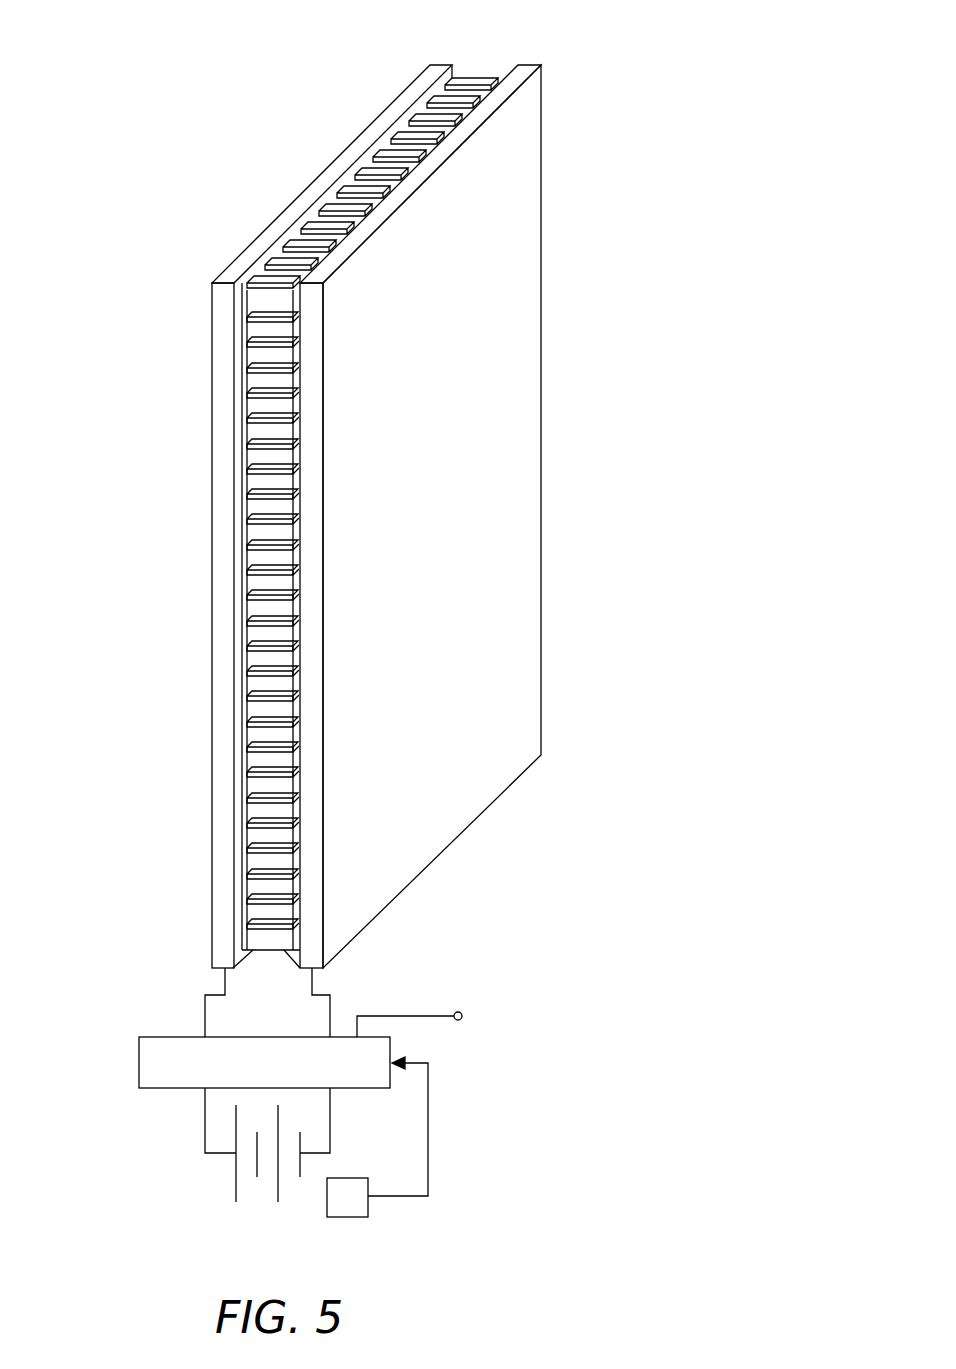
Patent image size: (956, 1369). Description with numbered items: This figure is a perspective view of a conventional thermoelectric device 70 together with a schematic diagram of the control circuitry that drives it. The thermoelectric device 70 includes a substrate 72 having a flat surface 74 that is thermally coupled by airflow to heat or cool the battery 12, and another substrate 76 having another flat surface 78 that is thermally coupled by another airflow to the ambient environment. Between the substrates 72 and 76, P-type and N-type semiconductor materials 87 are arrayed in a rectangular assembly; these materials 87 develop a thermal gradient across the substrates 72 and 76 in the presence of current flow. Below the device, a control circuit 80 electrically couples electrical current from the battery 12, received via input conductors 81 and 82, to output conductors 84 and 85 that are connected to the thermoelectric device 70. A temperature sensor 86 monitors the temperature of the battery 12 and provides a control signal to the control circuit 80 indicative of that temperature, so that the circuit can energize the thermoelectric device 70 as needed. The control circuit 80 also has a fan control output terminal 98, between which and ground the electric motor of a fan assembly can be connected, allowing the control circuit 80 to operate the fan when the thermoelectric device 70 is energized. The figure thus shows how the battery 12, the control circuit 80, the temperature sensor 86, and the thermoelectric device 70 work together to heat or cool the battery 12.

The thermoelectric device 70 is at (383, 488).
The substrate 72 is at (466, 516).
The flat surface 74 is at (400, 400).
The substrate 76 is at (267, 240).
The flat surface 78 is at (331, 488).
The control circuit 80 is at (302, 1104).
The input conductor 81 is at (205, 1132).
The input conductor 82 is at (330, 1115).
The output conductor 84 is at (202, 1005).
The output conductor 85 is at (333, 1007).
The temperature sensor 86 is at (360, 1208).
The semiconductor materials 87 is at (478, 83).
The fan control output terminal 98 is at (462, 1018).
The battery 12 is at (208, 1178).